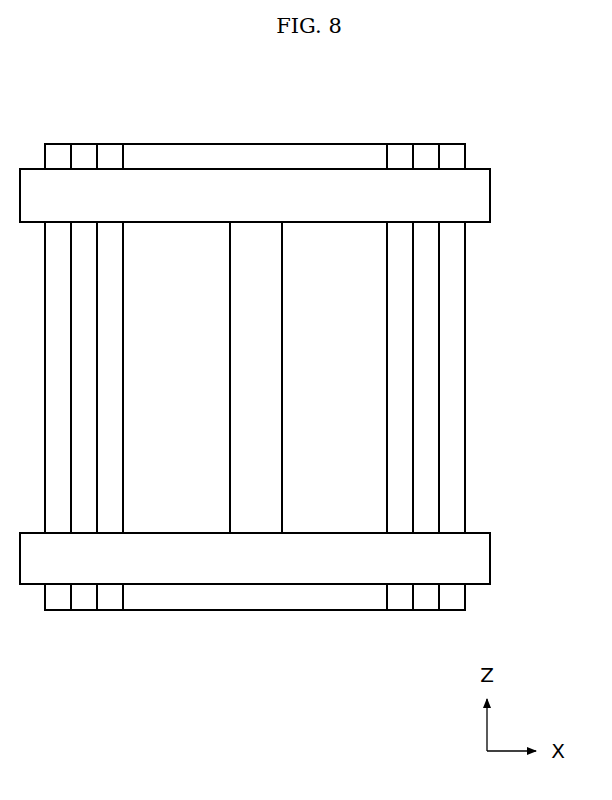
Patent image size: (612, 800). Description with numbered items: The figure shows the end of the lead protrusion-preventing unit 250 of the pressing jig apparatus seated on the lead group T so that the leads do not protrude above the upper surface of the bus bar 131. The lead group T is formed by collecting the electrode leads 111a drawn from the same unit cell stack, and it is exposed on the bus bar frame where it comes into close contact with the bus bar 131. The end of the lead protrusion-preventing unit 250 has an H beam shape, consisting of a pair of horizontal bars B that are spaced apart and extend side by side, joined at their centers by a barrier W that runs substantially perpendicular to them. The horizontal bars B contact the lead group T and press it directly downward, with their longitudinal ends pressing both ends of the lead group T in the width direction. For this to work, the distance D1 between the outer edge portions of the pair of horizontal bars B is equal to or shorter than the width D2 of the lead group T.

The lead protrusion-preventing unit 250 is at (255, 367).
The electrode lead 111a is at (425, 155).
The horizontal bar B is at (160, 187).
The barrier W is at (257, 475).
The bus bar 131 is at (330, 500).
The lead group T is at (45, 616).
The distance between outer edge portions of the pair of horizontal bars D1 is at (493, 169).
The width of the lead group D2 is at (468, 144).